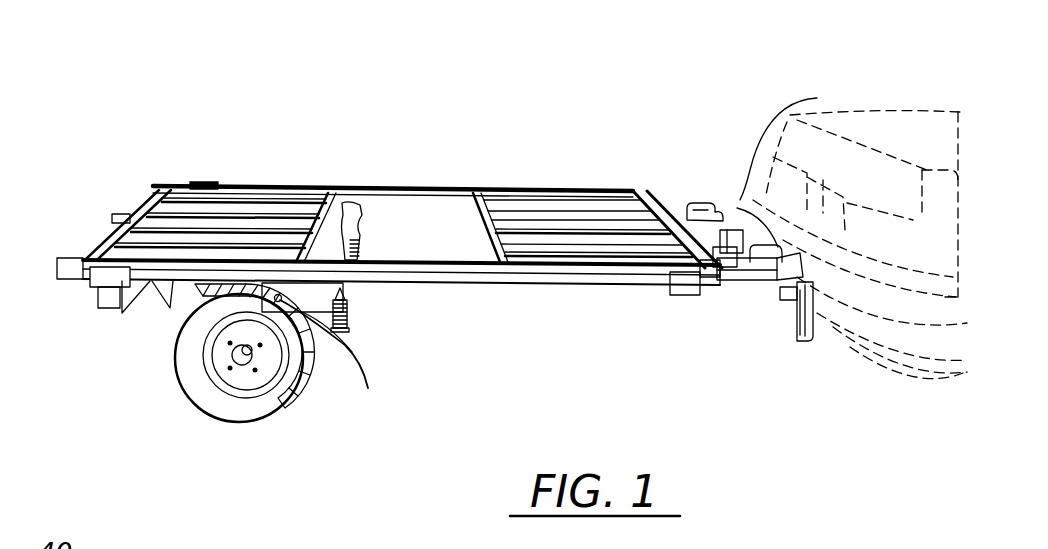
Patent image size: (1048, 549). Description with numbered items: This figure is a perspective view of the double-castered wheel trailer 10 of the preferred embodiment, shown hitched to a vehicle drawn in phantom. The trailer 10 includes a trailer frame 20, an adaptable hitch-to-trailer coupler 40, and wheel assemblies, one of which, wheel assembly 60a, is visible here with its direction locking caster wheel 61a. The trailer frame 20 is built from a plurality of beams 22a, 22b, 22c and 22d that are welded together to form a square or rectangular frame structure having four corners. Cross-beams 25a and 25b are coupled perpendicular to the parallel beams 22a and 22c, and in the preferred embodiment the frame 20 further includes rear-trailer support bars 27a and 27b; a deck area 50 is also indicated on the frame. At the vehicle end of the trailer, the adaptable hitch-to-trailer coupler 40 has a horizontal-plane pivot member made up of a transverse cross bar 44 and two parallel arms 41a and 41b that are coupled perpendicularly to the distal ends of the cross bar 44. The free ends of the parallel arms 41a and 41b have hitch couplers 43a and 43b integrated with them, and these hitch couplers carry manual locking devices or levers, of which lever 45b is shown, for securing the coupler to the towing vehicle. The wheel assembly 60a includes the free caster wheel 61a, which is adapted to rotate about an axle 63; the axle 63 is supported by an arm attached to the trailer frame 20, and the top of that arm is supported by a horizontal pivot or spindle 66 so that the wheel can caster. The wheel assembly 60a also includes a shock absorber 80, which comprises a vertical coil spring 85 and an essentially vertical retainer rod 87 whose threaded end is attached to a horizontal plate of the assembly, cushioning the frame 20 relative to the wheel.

The double-castered wheel trailer 10 is at (122, 134).
The trailer frame 20 is at (446, 160).
The beam 22a is at (488, 280).
The beam 22b is at (669, 180).
The beam 22c is at (484, 188).
The beam 22d is at (142, 208).
The cross-beam 25a is at (485, 187).
The cross-beam 25b is at (330, 200).
The rear-trailer support bar 27a is at (140, 243).
The rear-trailer support bar 27b is at (258, 227).
The adaptable hitch-to-trailer coupler 40 is at (688, 205).
The parallel arm 41a is at (712, 297).
The parallel arm 41b is at (714, 210).
The hitch coupler 43a is at (798, 270).
The hitch coupler 43b is at (817, 98).
The transverse cross bar 44 is at (753, 268).
The manual locking device or lever 45b is at (738, 205).
The deck section 50 is at (572, 218).
The wheel assembly 60a is at (160, 374).
The direction locking caster wheel 61a is at (250, 407).
The axle 63 is at (238, 354).
The horizontal pivot or spindle 66 is at (332, 359).
The shock absorber 80 is at (376, 360).
The vertical coil spring 85 is at (343, 313).
The retainer rod 87 is at (350, 343).